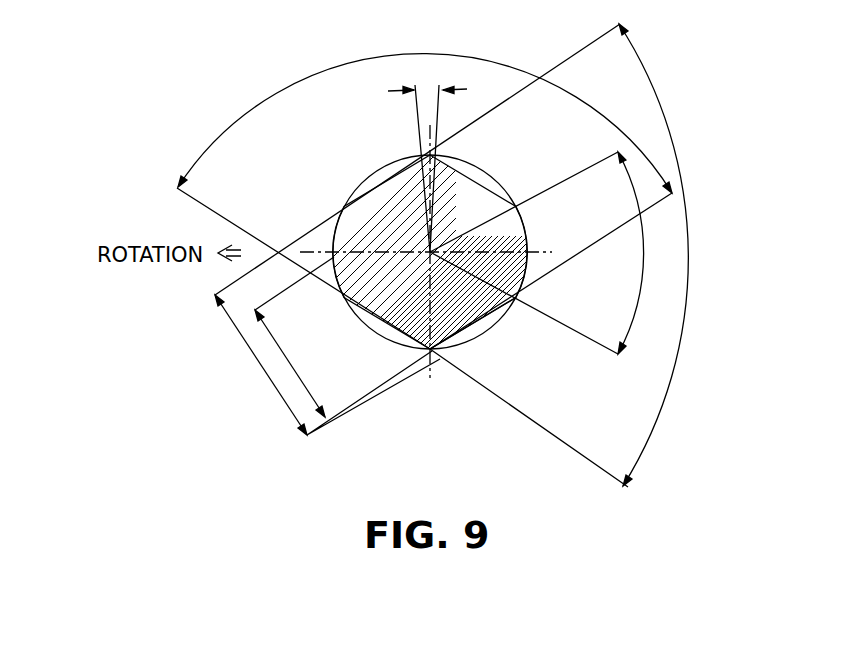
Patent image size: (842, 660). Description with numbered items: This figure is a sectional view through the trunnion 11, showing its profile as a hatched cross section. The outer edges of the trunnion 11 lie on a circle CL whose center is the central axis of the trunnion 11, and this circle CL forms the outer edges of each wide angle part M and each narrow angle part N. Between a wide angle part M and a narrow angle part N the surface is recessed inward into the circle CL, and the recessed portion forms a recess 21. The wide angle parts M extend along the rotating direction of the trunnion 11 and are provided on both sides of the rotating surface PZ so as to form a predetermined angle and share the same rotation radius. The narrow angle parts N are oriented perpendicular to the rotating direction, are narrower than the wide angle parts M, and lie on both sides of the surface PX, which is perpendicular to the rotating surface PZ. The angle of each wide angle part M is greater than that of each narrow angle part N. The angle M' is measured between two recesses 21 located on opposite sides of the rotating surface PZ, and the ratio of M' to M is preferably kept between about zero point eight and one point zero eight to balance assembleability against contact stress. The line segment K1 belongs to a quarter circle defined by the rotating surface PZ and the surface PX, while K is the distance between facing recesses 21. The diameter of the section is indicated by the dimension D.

The trunnion 11 is at (368, 217).
The recess 21 is at (466, 335).
The distance between facing recesses K is at (261, 365).
The line segment of a quarter circle K1 is at (290, 363).
The narrow angle part N is at (427, 156).
The wide angle part M is at (620, 260).
The angle between two recesses M' is at (668, 260).
The diameter D is at (430, 252).
The rotating surface PZ is at (520, 270).
The surface perpendicular to the rotating surface PX is at (428, 377).
The circle CL is at (467, 351).